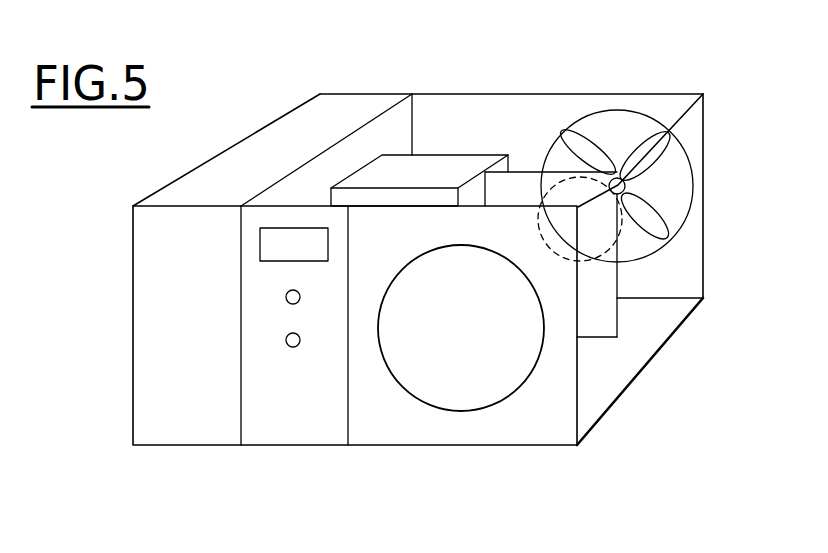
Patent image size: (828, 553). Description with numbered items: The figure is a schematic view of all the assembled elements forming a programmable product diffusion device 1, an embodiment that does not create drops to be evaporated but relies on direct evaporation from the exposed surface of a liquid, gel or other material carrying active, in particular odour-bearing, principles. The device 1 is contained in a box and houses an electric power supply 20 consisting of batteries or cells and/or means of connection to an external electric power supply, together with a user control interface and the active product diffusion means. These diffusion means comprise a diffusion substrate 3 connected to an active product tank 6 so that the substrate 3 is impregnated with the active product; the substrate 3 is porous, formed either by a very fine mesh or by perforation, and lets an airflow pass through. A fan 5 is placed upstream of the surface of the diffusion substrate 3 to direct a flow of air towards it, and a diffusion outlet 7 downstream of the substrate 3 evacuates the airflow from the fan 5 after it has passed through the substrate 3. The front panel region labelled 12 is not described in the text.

The device 1 is at (664, 390).
The diffusion substrate 3 is at (523, 183).
The fan 5 is at (617, 132).
The active product tank 6 is at (448, 170).
The diffusion outlet 7 is at (488, 365).
The operation panel 12 is at (290, 392).
The electric power supply 20 is at (341, 115).